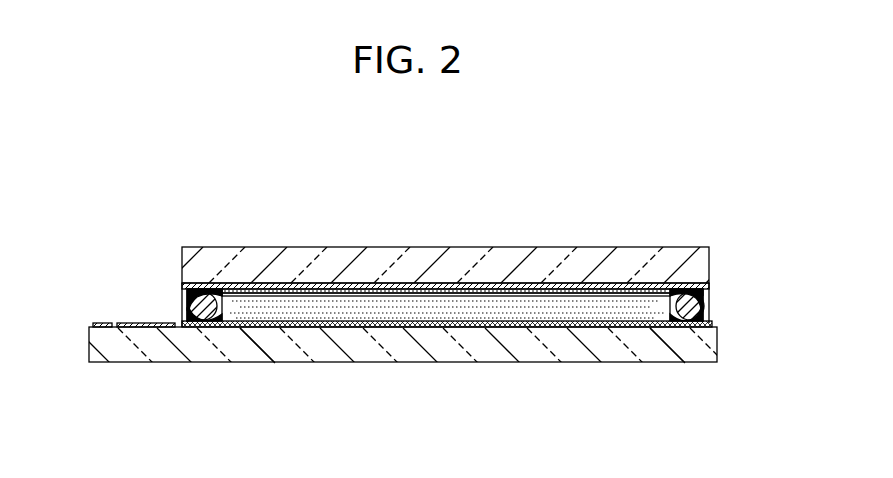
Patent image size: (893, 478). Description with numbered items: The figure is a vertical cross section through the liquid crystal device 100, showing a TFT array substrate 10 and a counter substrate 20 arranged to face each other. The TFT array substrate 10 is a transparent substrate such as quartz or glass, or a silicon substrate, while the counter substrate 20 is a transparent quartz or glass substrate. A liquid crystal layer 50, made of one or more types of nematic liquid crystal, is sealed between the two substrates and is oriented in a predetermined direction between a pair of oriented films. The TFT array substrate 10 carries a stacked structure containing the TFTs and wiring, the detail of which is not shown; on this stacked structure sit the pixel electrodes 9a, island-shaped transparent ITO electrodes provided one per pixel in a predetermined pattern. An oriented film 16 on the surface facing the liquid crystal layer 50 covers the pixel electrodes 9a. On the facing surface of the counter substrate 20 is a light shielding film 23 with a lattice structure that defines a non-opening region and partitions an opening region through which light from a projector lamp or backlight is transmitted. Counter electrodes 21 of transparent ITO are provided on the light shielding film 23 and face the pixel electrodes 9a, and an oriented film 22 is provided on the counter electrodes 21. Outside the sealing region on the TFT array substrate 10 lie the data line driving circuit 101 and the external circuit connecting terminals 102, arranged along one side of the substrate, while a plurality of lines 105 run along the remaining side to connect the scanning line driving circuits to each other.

The liquid crystal device 100 is at (674, 134).
The TFT array substrate 10 is at (500, 353).
The counter substrate 20 is at (425, 262).
The counter electrodes 21 is at (594, 286).
The oriented film 22 is at (540, 291).
The light shielding film 23 is at (490, 292).
The oriented film 16 is at (600, 316).
The liquid crystal layer 50 is at (446, 328).
The data line driving circuit 101 is at (139, 322).
The external circuit connecting terminals 102 is at (111, 322).
The pixel electrodes 9a is at (276, 330).
The lines 105 is at (667, 329).